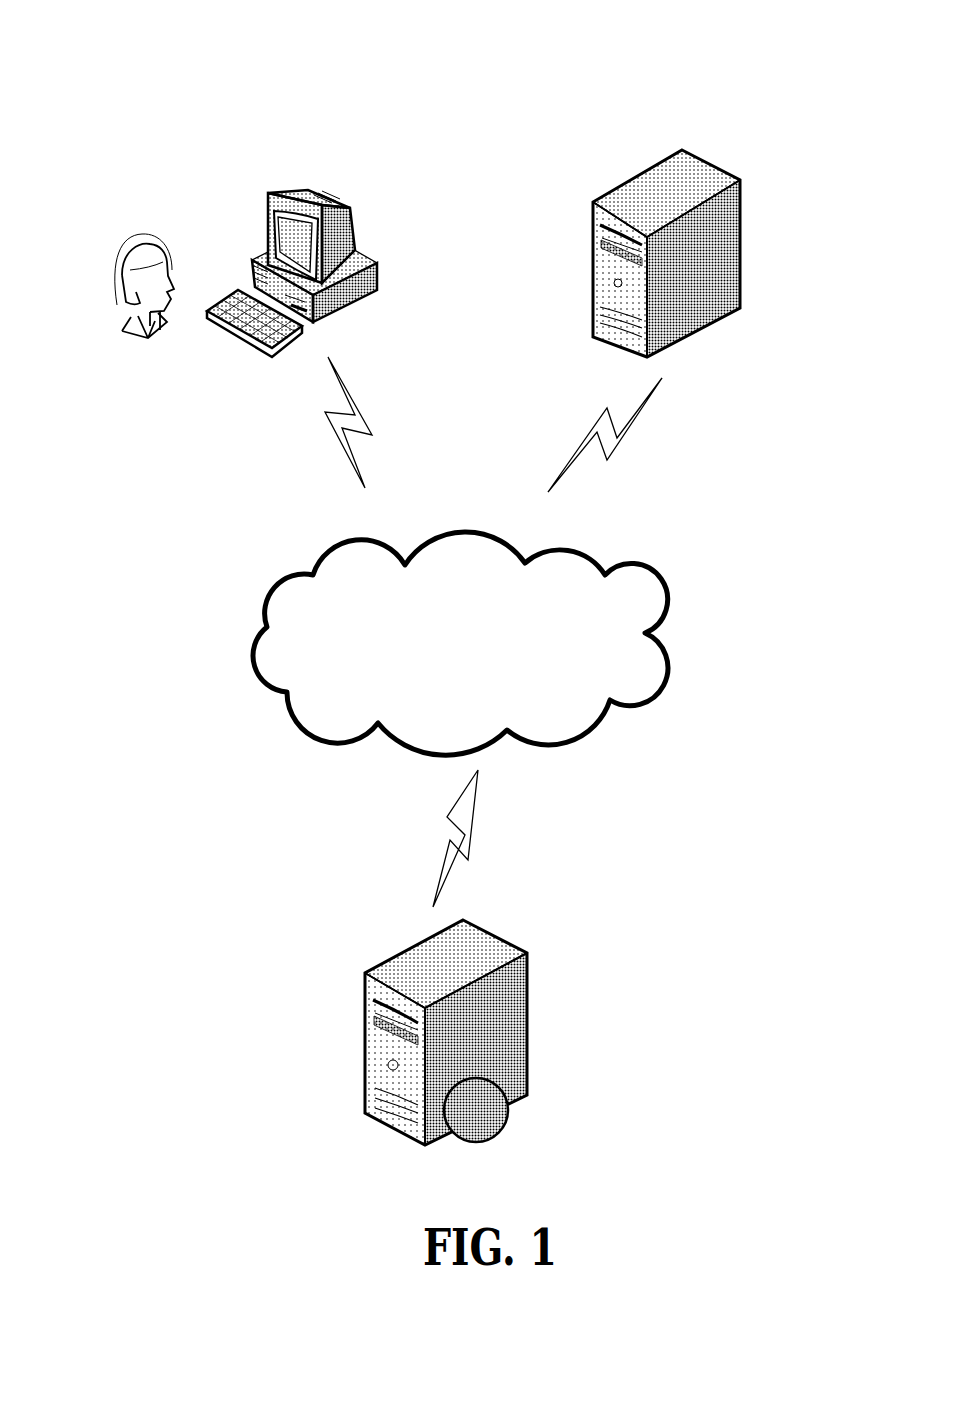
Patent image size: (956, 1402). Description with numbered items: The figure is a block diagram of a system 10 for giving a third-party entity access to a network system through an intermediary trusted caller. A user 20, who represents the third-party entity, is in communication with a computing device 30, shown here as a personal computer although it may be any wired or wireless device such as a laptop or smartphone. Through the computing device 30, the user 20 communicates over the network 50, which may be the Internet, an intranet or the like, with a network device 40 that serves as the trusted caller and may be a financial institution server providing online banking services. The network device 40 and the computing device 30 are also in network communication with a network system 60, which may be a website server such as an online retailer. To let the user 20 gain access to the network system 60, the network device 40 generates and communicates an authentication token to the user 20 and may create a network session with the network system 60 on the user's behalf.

The system 10 is at (473, 122).
The user 20 is at (145, 233).
The computing device 30 is at (308, 187).
The network device 40 is at (697, 207).
The network 50 is at (523, 653).
The network system 60 is at (517, 975).